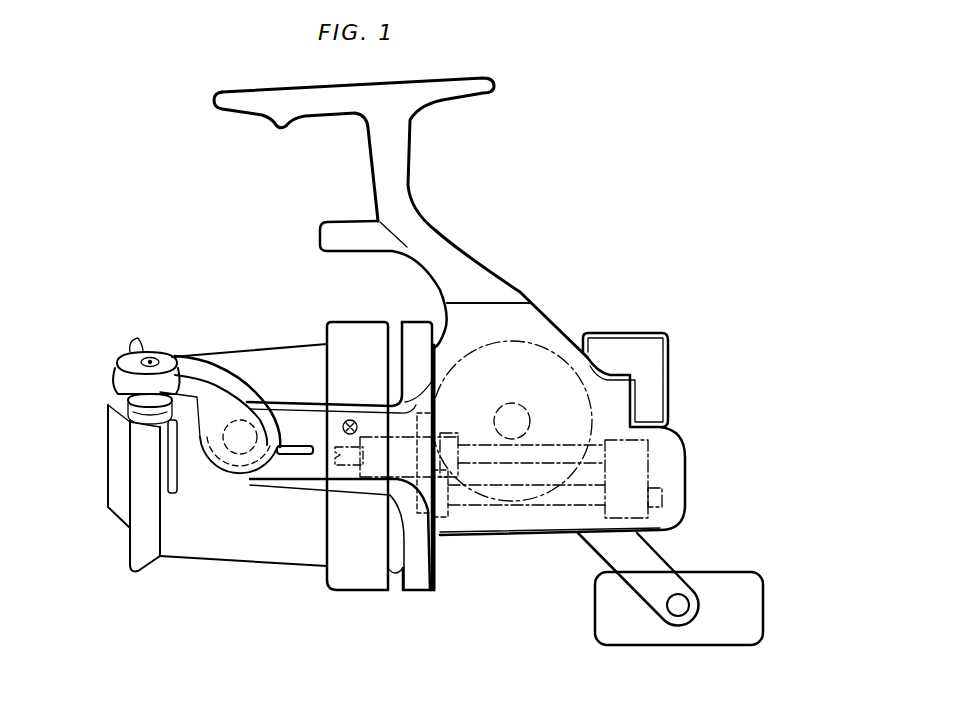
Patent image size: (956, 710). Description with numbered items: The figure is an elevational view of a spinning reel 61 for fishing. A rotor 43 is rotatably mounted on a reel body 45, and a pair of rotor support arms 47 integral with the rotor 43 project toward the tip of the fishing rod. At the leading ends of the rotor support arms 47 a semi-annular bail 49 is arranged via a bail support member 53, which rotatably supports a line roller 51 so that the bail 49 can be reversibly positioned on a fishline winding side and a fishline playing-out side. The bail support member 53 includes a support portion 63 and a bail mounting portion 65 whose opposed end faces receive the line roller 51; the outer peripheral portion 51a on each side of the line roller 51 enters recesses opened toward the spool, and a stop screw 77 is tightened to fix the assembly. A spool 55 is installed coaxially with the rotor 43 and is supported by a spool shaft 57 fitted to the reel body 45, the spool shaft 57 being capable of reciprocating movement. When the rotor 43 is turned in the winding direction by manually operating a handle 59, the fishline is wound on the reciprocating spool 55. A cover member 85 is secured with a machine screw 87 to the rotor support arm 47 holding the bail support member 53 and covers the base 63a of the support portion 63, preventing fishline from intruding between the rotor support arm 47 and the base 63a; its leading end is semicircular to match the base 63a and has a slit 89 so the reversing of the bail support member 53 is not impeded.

The spinning reel 61 is at (552, 201).
The reel body 45 is at (548, 318).
The rotor 43 is at (415, 326).
The spool 55 is at (353, 328).
The bail support member 53 is at (195, 358).
The support portion 63 is at (217, 352).
The cover member 85 is at (232, 468).
The base of the support portion 63a is at (247, 482).
The slit 89 is at (290, 440).
The screw 87 is at (352, 418).
The spool shaft 57 is at (348, 478).
The rotor support arms 47 is at (318, 488).
The line roller 51 is at (127, 358).
The stop screw 77 is at (147, 395).
The outer peripheral portion of the line roller 51a is at (122, 418).
The bail mounting portion 65 is at (142, 425).
The bail 49 is at (168, 472).
The handle 59 is at (648, 558).